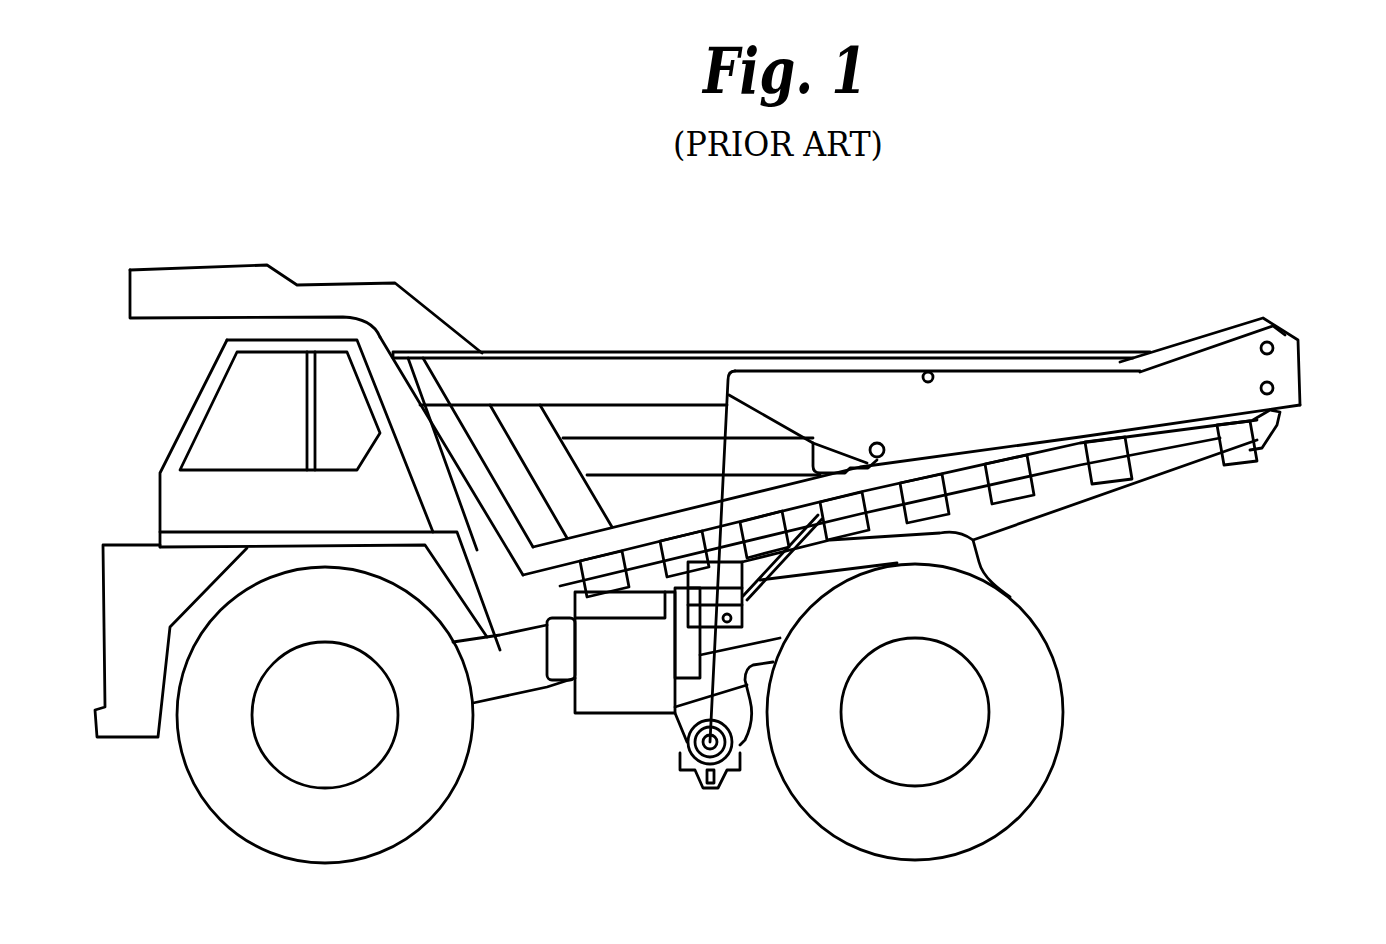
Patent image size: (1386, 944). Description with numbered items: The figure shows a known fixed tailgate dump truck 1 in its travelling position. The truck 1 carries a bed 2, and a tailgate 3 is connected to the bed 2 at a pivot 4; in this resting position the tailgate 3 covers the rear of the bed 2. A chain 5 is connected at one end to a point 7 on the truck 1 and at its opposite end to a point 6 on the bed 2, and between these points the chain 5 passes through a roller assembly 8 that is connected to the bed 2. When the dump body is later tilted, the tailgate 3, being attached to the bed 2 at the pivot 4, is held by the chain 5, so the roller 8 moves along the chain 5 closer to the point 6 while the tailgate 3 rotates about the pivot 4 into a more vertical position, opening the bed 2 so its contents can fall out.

The truck 1 is at (347, 213).
The bed 2 is at (1094, 502).
The tailgate 3 is at (1304, 373).
The pivot 4 is at (873, 438).
The chain 5 is at (714, 454).
The point 6 is at (925, 368).
The point 7 is at (688, 783).
The roller assembly 8 is at (750, 600).